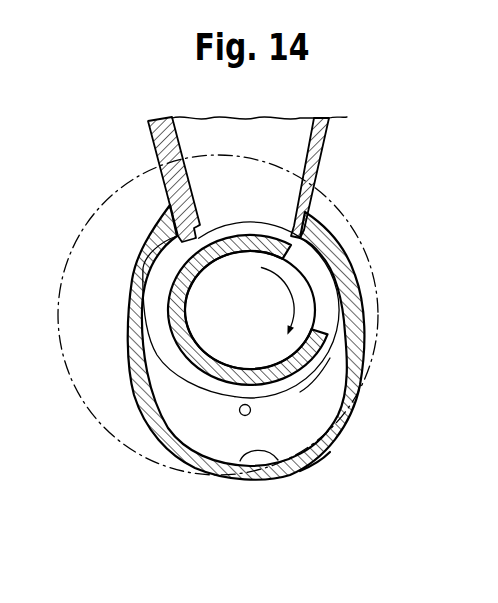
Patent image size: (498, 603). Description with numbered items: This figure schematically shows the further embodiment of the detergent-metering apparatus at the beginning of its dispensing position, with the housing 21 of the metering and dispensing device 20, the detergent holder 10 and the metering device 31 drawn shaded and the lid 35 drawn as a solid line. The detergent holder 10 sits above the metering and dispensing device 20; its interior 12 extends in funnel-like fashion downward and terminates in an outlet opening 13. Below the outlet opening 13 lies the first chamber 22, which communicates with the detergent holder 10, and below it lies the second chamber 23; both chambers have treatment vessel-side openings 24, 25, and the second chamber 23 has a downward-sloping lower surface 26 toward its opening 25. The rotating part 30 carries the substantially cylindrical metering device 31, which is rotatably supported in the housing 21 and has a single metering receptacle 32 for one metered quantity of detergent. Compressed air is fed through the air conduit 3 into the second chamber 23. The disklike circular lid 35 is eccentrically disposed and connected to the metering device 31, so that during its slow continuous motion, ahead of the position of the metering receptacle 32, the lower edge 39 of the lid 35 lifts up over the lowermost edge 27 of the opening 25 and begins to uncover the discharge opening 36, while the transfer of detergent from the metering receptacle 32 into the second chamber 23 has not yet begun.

The air conduit 3 is at (239, 410).
The detergent holder 10 is at (341, 118).
The interior of the detergent holder 12 is at (185, 138).
The outlet opening 13 is at (202, 275).
The metering and dispensing device 20 is at (269, 307).
The housing 21 is at (354, 268).
The first chamber 22 is at (150, 274).
The treatment vessel-side opening of the first chamber 24 is at (168, 246).
The second chamber 23 is at (368, 407).
The treatment vessel-side opening of the second chamber 25 is at (306, 417).
The downward-sloping lower surface 26 is at (306, 481).
The lowermost edge of the treatment vessel-side opening 27 is at (276, 456).
The rotating part 30 is at (200, 310).
The metering device 31 is at (200, 310).
The metering receptacle 32 is at (207, 333).
The lid 35 is at (218, 335).
The discharge opening 36 is at (313, 460).
The lower edge of the lid 39 is at (223, 475).